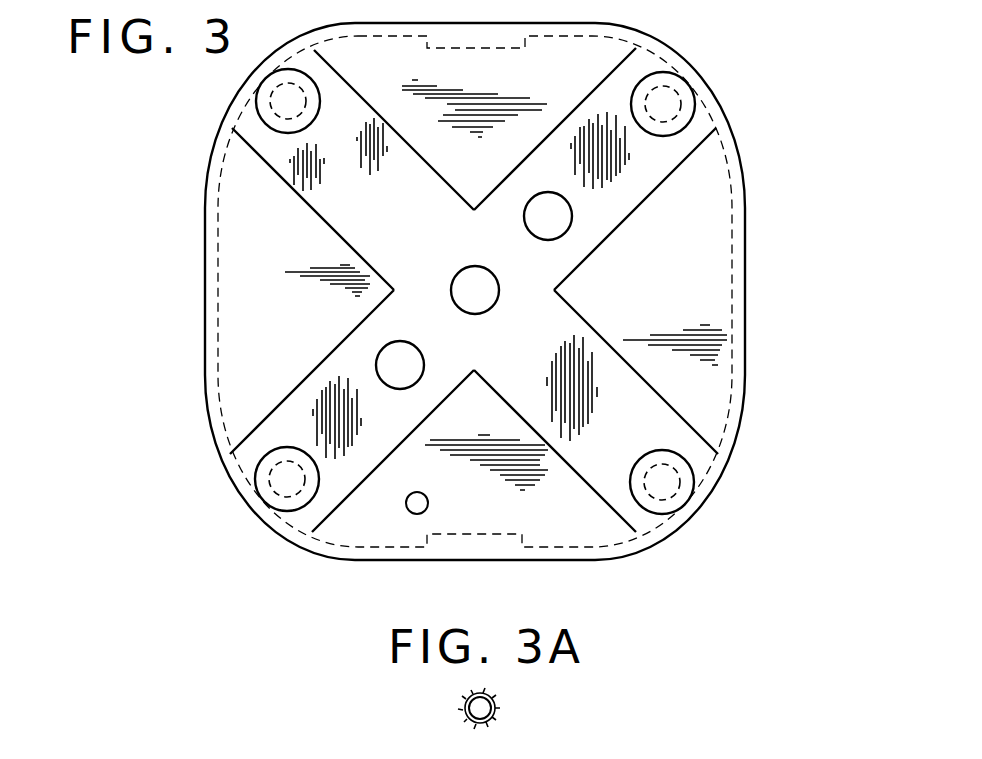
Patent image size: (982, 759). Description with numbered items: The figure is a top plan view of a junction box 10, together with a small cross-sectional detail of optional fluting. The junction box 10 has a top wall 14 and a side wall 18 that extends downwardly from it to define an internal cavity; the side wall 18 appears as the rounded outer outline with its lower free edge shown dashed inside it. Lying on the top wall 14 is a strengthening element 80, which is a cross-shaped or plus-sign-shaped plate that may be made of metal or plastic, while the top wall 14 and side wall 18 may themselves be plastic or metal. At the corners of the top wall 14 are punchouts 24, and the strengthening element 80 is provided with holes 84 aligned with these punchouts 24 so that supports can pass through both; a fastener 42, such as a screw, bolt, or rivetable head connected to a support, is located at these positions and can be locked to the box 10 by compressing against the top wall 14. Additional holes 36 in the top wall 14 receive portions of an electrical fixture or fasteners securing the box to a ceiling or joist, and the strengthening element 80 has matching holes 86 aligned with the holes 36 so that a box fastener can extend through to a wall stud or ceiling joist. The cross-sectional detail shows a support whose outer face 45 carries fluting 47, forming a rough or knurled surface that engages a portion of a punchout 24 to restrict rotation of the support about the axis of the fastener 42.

In FIG. 3, the junction box 10 is at (233, 557).
In FIG. 3, the top wall 14 is at (300, 312).
In FIG. 3, the side wall 18 is at (744, 365).
In FIG. 3, the punchouts 24 is at (280, 497).
In FIG. 3, the holes or punchouts 36 is at (548, 240).
In FIG. 3, the fastener 42 is at (318, 117).
In FIG. 3A, the outer surface or face 45 is at (503, 704).
In FIG. 3A, the fluting 47 is at (463, 718).
In FIG. 3, the strengthening element 80 is at (348, 218).
In FIG. 3, the holes 84 is at (281, 458).
In FIG. 3, the holes 86 is at (556, 222).